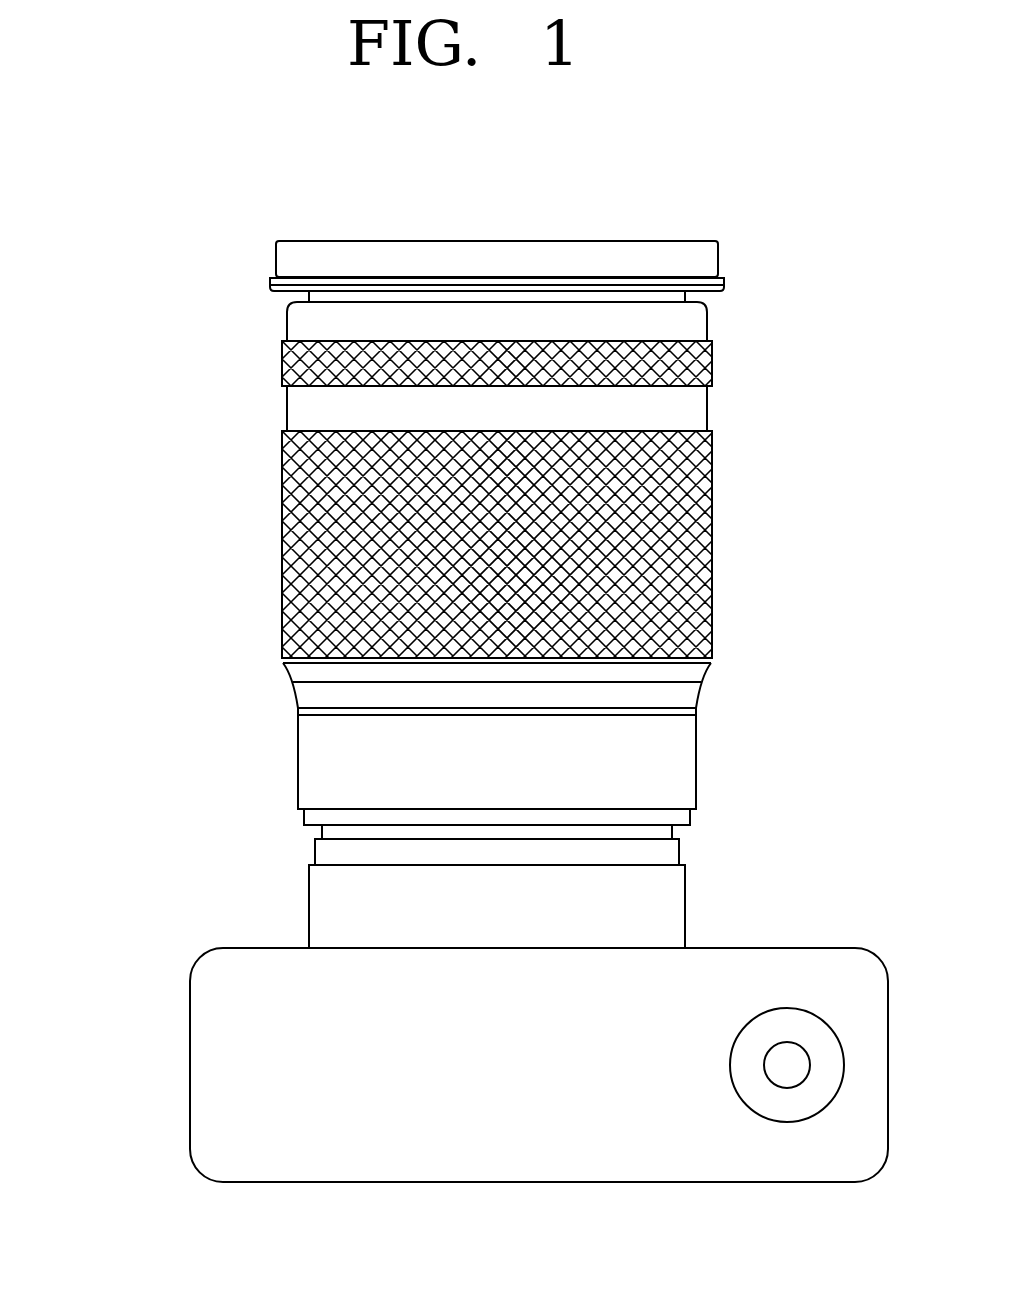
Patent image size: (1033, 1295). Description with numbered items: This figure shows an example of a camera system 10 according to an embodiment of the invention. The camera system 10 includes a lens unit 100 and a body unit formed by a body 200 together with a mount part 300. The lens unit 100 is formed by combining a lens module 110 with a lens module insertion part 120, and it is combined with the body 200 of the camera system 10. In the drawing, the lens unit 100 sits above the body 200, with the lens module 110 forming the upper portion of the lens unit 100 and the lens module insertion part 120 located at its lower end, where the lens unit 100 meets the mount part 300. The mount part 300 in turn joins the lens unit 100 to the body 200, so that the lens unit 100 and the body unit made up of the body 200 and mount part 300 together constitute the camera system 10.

The camera system 10 is at (768, 256).
The lens unit 100 is at (127, 816).
The lens module 110 is at (310, 538).
The lens module insertion part 120 is at (313, 812).
The body 200 is at (208, 1048).
The mount part 300 is at (327, 853).